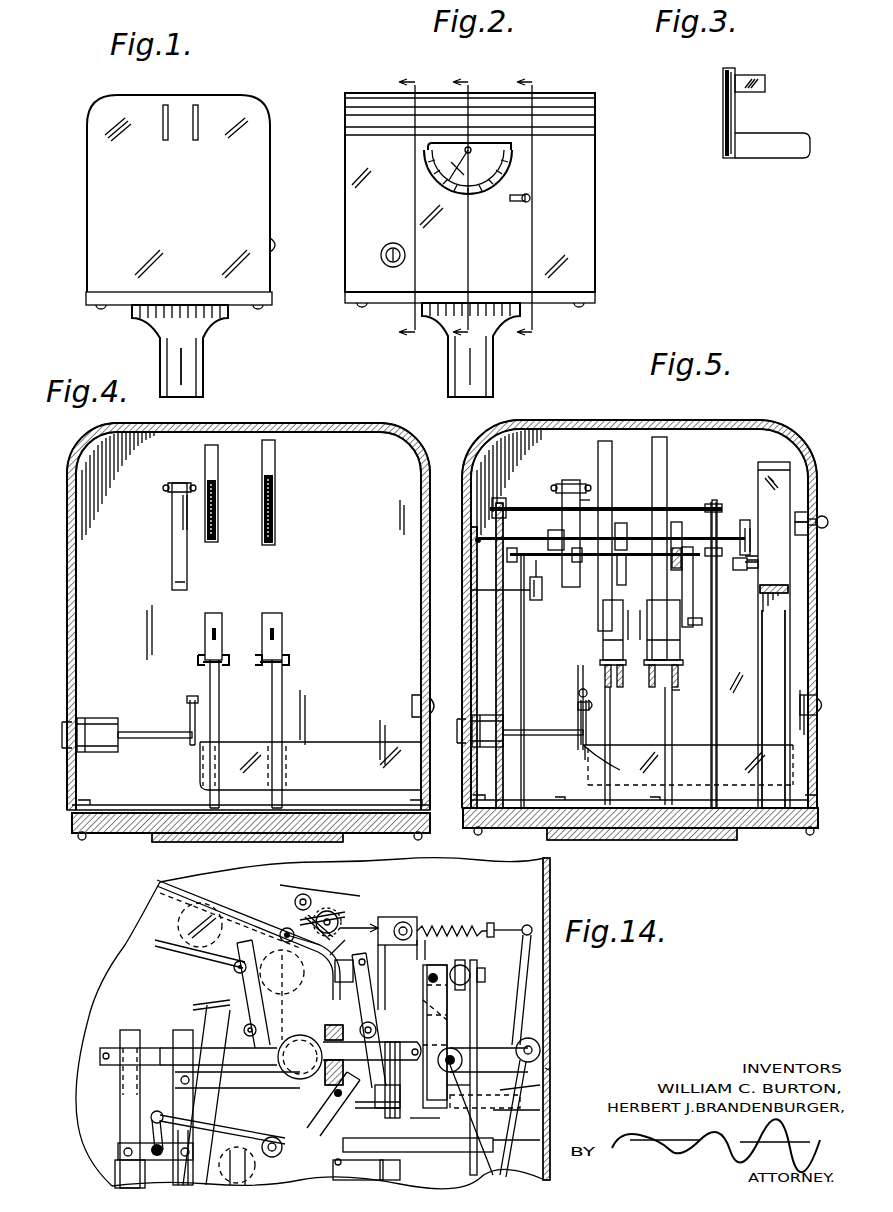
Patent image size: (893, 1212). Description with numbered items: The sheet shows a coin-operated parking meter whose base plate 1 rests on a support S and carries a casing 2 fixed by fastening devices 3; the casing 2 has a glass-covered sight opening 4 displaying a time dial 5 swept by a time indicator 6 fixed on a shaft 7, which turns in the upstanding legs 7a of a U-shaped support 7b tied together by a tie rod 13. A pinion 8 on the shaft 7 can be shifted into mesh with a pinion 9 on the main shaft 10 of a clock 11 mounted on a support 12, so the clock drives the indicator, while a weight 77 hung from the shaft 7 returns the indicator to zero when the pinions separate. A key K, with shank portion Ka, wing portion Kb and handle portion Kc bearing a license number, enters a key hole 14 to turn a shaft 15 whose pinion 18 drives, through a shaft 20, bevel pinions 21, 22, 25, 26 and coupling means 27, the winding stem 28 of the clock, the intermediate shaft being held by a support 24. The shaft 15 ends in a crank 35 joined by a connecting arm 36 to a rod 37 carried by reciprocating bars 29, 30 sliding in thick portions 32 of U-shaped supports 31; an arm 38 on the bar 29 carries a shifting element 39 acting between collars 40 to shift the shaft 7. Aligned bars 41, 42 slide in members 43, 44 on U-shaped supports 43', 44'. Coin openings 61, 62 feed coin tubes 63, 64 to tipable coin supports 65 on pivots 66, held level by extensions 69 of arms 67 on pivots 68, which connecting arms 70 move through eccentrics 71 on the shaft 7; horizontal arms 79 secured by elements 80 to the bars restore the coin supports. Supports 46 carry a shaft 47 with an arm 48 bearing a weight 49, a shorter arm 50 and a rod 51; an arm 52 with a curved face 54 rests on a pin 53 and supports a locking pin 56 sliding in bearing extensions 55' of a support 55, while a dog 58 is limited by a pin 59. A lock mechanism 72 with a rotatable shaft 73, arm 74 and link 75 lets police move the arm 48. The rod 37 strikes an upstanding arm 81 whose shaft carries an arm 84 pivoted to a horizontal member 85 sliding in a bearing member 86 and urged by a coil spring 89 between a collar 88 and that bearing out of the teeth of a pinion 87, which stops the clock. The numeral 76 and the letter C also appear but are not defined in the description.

In FIG. 1, the base plate 1 is at (272, 300).
In FIG. 2, the base plate 1 is at (597, 296).
In FIG. 4, the base plate 1 is at (125, 833).
In FIG. 5, the base plate 1 is at (768, 828).
In FIG. 1, the casing 2 is at (258, 193).
In FIG. 2, the casing 2 is at (575, 177).
In FIG. 4, the casing 2 is at (400, 435).
In FIG. 5, the casing 2 is at (725, 428).
In FIG. 14, the casing 2 is at (313, 1023).
In FIG. 1, the fastening devices 3 is at (268, 330).
In FIG. 2, the fastening devices 3 is at (505, 340).
In FIG. 4, the fastening devices 3 is at (82, 840).
In FIG. 5, the fastening devices 3 is at (480, 835).
In FIG. 2, the glass-covered sight opening 4 is at (518, 150).
In FIG. 5, the glass-covered sight opening 4 is at (462, 537).
In FIG. 2, the time dial 5 is at (425, 380).
In FIG. 5, the time dial 5 is at (496, 643).
In FIG. 2, the time indicator 6 is at (483, 148).
In FIG. 5, the time indicator 6 is at (478, 537).
In FIG. 2, the shaft 7 is at (465, 148).
In FIG. 5, the shaft 7 is at (510, 508).
In FIG. 14, the shaft 7 is at (283, 933).
In FIG. 5, the upstanding legs 7a is at (717, 688).
In FIG. 14, the upstanding legs 7a is at (330, 905).
In FIG. 5, the U-shaped support 7b is at (585, 760).
In FIG. 5, the pinion 8 is at (740, 535).
In FIG. 5, the pinion 9 is at (748, 528).
In FIG. 14, the pinion 9 is at (347, 912).
In FIG. 5, the main shaft 10 is at (771, 495).
In FIG. 14, the main shaft 10 is at (355, 890).
In FIG. 5, the clock 11 is at (772, 470).
In FIG. 14, the clock 11 is at (350, 906).
In FIG. 5, the support 12 is at (772, 640).
In FIG. 14, the support 12 is at (500, 1172).
In FIG. 5, the tie rod 13 is at (690, 548).
In FIG. 14, the tie rod 13 is at (290, 878).
In FIG. 2, the key hole 14 is at (518, 195).
In FIG. 5, the key hole 14 is at (612, 766).
In FIG. 5, the shaft 15 is at (627, 535).
In FIG. 5, the pinion 18 is at (484, 574).
In FIG. 14, the pinion 18 is at (192, 1008).
In FIG. 14, the shaft 20 is at (440, 965).
In FIG. 14, the bevel pinion 21 is at (478, 975).
In FIG. 14, the bevel pinion 22 is at (478, 993).
In FIG. 14, the support 24 is at (520, 1100).
In FIG. 14, the second smaller bevel pinion 25 is at (370, 990).
In FIG. 5, the bevel pinion 26 is at (738, 570).
In FIG. 5, the coupling means 27 is at (765, 558).
In FIG. 5, the winding stem 28 is at (774, 588).
In FIG. 5, the bar 29 is at (578, 693).
In FIG. 14, the bar 29 is at (348, 1042).
In FIG. 5, the bar 30 is at (672, 690).
In FIG. 14, the U-shaped supports 31 is at (333, 1170).
In FIG. 14, the thick portions 32 is at (320, 1048).
In FIG. 14, the crank 35 is at (584, 1065).
In FIG. 14, the connecting arm 36 is at (480, 1052).
In FIG. 14, the rod 37 is at (540, 1048).
In FIG. 14, the arm 38 is at (359, 922).
In FIG. 5, the shifting element 39 is at (555, 530).
In FIG. 14, the shifting element 39 is at (395, 917).
In FIG. 5, the collars 40 is at (580, 508).
In FIG. 4, the bar 41 is at (212, 634).
In FIG. 4, the bar 42 is at (274, 636).
In FIG. 14, the bar 42 is at (100, 1052).
In FIG. 14, the member 43 is at (120, 1095).
In FIG. 14, the U-shaped support 43' is at (105, 1178).
In FIG. 4, the member 44 is at (260, 622).
In FIG. 5, the member 44 is at (641, 634).
In FIG. 14, the member 44 is at (161, 1090).
In FIG. 4, the U-shaped support 44' is at (268, 734).
In FIG. 5, the U-shaped support 44' is at (638, 740).
In FIG. 14, the U-shaped support 44' is at (200, 1167).
In FIG. 5, the upstanding supports 46 is at (540, 640).
In FIG. 14, the upstanding supports 46 is at (185, 1068).
In FIG. 5, the shaft 47 is at (585, 560).
In FIG. 14, the shaft 47 is at (235, 970).
In FIG. 4, the arm 48 is at (187, 525).
In FIG. 5, the arm 48 is at (578, 676).
In FIG. 14, the arm 48 is at (238, 982).
In FIG. 4, the weight 49 is at (172, 558).
In FIG. 5, the weight 49 is at (562, 470).
In FIG. 5, the shorter arm 50 is at (695, 625).
In FIG. 5, the rod 51 is at (637, 625).
In FIG. 14, the rod 51 is at (210, 1020).
In FIG. 5, the arm 52 is at (592, 704).
In FIG. 14, the arm 52 is at (540, 1140).
In FIG. 14, the pin 53 is at (340, 1165).
In FIG. 14, the curved face 54 is at (390, 1165).
In FIG. 14, the support 55 is at (418, 1156).
In FIG. 14, the bearing extensions 55' is at (430, 1128).
In FIG. 14, the locking pin 56 is at (440, 1090).
In FIG. 14, the dog 58 is at (440, 1040).
In FIG. 14, the pin 59 is at (395, 1082).
In FIG. 1, the coin opening 61 is at (198, 118).
In FIG. 1, the coin opening 62 is at (168, 118).
In FIG. 4, the coin tube 63 is at (205, 457).
In FIG. 5, the coin tube 63 is at (605, 441).
In FIG. 14, the coin tube 63 is at (168, 910).
In FIG. 4, the coin tube 64 is at (268, 440).
In FIG. 5, the coin tube 64 is at (660, 437).
In FIG. 14, the coin tube 64 is at (205, 885).
In FIG. 14, the tipable coin support 65 is at (280, 1112).
In FIG. 14, the pivot 66 is at (345, 1108).
In FIG. 14, the vertical arm 67 is at (360, 972).
In FIG. 14, the pivot 68 is at (425, 955).
In FIG. 14, the extension 69 is at (395, 1045).
In FIG. 5, the connecting arm 70 is at (677, 525).
In FIG. 14, the connecting arm 70 is at (277, 997).
In FIG. 5, the eccentric 71 is at (714, 502).
In FIG. 14, the eccentric 71 is at (290, 897).
In FIG. 1, the lock mechanism 72 is at (282, 252).
In FIG. 2, the lock mechanism 72 is at (381, 252).
In FIG. 4, the lock mechanism 72 is at (100, 735).
In FIG. 5, the lock mechanism 72 is at (462, 748).
In FIG. 4, the rotatable shaft 73 is at (150, 732).
In FIG. 5, the rotatable shaft 73 is at (538, 735).
In FIG. 14, the rotatable shaft 73 is at (148, 1150).
In FIG. 4, the arm 74 is at (190, 740).
In FIG. 5, the arm 74 is at (586, 735).
In FIG. 14, the arm 74 is at (150, 1130).
In FIG. 4, the link 75 is at (191, 696).
In FIG. 5, the link 75 is at (577, 706).
In FIG. 14, the link 75 is at (262, 1148).
In FIG. 4, the coin tray 76 is at (318, 740).
In FIG. 5, the coin tray 76 is at (630, 742).
In FIG. 14, the coin tray 76 is at (240, 1185).
In FIG. 5, the weight 77 is at (538, 600).
In FIG. 14, the horizontal arms 79 is at (540, 1085).
In FIG. 14, the elements 80 is at (520, 1072).
In FIG. 14, the upstanding arm 81 is at (540, 1110).
In FIG. 14, the upstanding arm 84 is at (518, 995).
In FIG. 5, the horizontal member 85 is at (828, 522).
In FIG. 14, the horizontal member 85 is at (532, 930).
In FIG. 5, the bearing member 86 is at (790, 517).
In FIG. 5, the pinion 87 is at (790, 530).
In FIG. 14, the collar 88 is at (494, 922).
In FIG. 14, the expansible coil spring 89 is at (462, 922).
In FIG. 14, the coin C is at (178, 923).
In FIG. 3, the key K is at (710, 133).
In FIG. 3, the shank portion Ka is at (723, 107).
In FIG. 3, the wing portion Kb is at (765, 84).
In FIG. 3, the handle or finger portion Kc is at (770, 158).
In FIG. 1, the support S is at (197, 370).
In FIG. 4, the support S is at (165, 842).
In FIG. 5, the support S is at (668, 840).